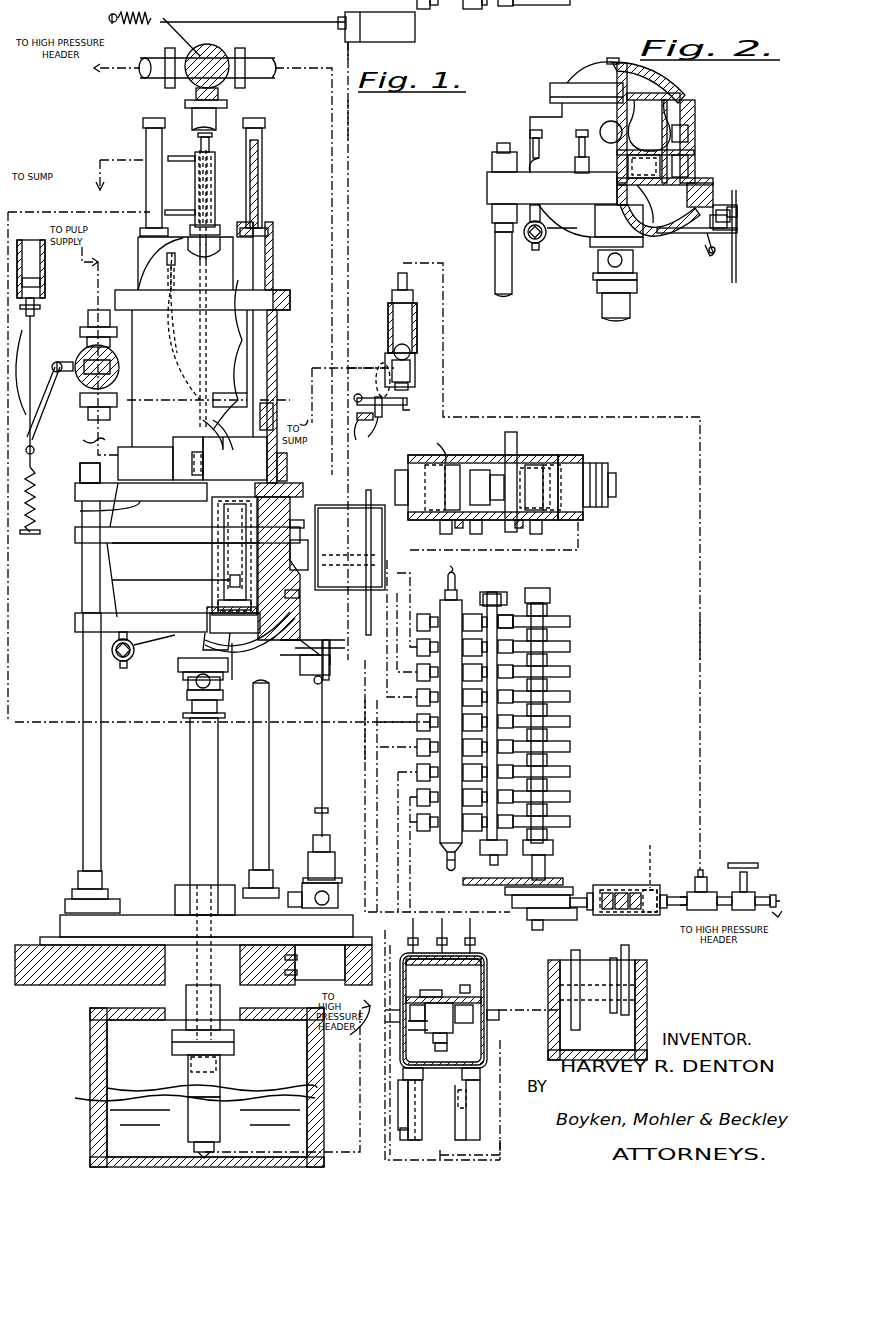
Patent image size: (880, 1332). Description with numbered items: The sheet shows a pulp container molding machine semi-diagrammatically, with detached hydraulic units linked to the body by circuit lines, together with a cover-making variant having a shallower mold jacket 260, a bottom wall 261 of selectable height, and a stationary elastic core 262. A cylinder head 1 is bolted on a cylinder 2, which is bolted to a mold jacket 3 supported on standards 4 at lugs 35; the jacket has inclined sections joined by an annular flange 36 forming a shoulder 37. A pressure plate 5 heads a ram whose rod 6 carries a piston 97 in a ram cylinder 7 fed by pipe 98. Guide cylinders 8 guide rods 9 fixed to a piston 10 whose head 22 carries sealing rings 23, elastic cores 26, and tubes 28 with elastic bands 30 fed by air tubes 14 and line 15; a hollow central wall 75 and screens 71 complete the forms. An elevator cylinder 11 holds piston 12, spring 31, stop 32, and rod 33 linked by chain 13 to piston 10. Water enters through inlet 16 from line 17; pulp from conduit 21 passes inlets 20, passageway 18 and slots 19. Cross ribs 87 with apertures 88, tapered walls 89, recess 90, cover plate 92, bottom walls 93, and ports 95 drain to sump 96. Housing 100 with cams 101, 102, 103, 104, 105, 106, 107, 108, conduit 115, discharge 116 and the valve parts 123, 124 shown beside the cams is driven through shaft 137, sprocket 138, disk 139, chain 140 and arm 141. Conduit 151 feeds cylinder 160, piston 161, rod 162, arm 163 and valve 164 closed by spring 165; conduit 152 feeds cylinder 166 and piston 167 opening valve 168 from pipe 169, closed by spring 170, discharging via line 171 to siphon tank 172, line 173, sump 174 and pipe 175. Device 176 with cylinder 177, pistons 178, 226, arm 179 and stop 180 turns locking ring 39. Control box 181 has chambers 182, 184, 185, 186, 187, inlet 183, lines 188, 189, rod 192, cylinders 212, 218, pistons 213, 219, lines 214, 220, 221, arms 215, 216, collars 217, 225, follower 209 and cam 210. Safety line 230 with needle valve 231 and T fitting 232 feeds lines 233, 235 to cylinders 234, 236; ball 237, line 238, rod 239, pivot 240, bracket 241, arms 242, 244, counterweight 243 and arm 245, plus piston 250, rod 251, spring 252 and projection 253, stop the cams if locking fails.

In FIG. 1, the cylinder head 1 is at (144, 262).
In FIG. 1, the cylinder 2 is at (278, 338).
In FIG. 1, the mold jacket 3 is at (288, 512).
In FIG. 1, the standards 4 is at (100, 697).
In FIG. 1, the pressure plate 5 is at (287, 388).
In FIG. 1, the ram rod 6 is at (306, 545).
In FIG. 1, the ram cylinder 7 is at (188, 1068).
In FIG. 1, the guide cylinders 8 is at (146, 146).
In FIG. 1, the guide rods 9 is at (254, 274).
In FIG. 1, the piston 10 is at (235, 422).
In FIG. 1, the elevator cylinder 11 is at (216, 184).
In FIG. 1, the elevator piston 12 is at (218, 166).
In FIG. 1, the chain 13 is at (210, 272).
In FIG. 1, the air inlet tubes 14 is at (183, 277).
In FIG. 1, the flexible air line 15 is at (187, 288).
In FIG. 1, the high pressure water inlet 16 is at (214, 230).
In FIG. 1, the high pressure water line 17 is at (212, 118).
In FIG. 1, the passageway 18 is at (288, 466).
In FIG. 1, the slots 19 is at (298, 490).
In FIG. 1, the inlets 20 is at (195, 452).
In FIG. 1, the conduit 21 is at (83, 456).
In FIG. 1, the head 22 is at (209, 463).
In FIG. 1, the sealing rings 23 is at (275, 414).
In FIG. 1, the elastic mold core 26 is at (222, 525).
In FIG. 1, the rigid tube 28 is at (228, 558).
In FIG. 1, the annular elastic band 30 is at (212, 602).
In FIG. 1, the coil spring 31 is at (195, 180).
In FIG. 1, the stop 32 is at (195, 210).
In FIG. 1, the piston rod 33 is at (160, 262).
In FIG. 1, the lugs 35 is at (80, 538).
In FIG. 1, the annular flange 36 is at (299, 598).
In FIG. 1, the shoulder 37 is at (305, 520).
In FIG. 1, the locking ring 39 is at (236, 648).
In FIG. 1, the fine mesh screen 71 is at (228, 572).
In FIG. 1, the hollow central wall 75 is at (222, 514).
In FIG. 1, the cross ribs 87 is at (210, 626).
In FIG. 1, the apertures 88 is at (208, 652).
In FIG. 1, the tapered walls 89 is at (214, 696).
In FIG. 1, the recess 90 is at (292, 610).
In FIG. 1, the perforated cover plate 92 is at (250, 632).
In FIG. 1, the bottom form walls 93 is at (233, 624).
In FIG. 1, the ports 95 is at (186, 690).
In FIG. 1, the sump 96 is at (110, 1030).
In FIG. 1, the piston 97 is at (196, 1083).
In FIG. 1, the high pressure water pipe 98 is at (248, 1153).
In FIG. 1, the housing 100 is at (442, 712).
In FIG. 1, the cam 101 is at (570, 722).
In FIG. 1, the cam 102 is at (570, 697).
In FIG. 1, the cam 103 is at (570, 647).
In FIG. 1, the cam 104 is at (570, 672).
In FIG. 1, the cam 105 is at (570, 797).
In FIG. 1, the cam 106 is at (570, 822).
In FIG. 1, the cam 107 is at (570, 772).
In FIG. 1, the cam 108 is at (570, 747).
In FIG. 1, the high pressure conduit 115 is at (455, 582).
In FIG. 1, the discharge conduit 116 is at (446, 870).
In FIG. 1, the cam 123 is at (518, 615).
In FIG. 1, the follower 124 is at (498, 604).
In FIG. 1, the cam shaft 137 is at (547, 858).
In FIG. 1, the sprocket 138 is at (548, 882).
In FIG. 1, the disk 139 is at (596, 885).
In FIG. 1, the chain 140 is at (499, 857).
In FIG. 1, the arm 141 is at (556, 914).
In FIG. 1, the high pressure conduit 151 is at (342, 730).
In FIG. 1, the conduit 152 is at (348, 126).
In FIG. 1, the cylinder 160 is at (42, 272).
In FIG. 1, the piston 161 is at (38, 284).
In FIG. 1, the rod 162 is at (34, 336).
In FIG. 1, the arm 163 is at (54, 401).
In FIG. 1, the valve 164 is at (82, 362).
In FIG. 1, the spring 165 is at (36, 501).
In FIG. 1, the cylinder 166 is at (400, 45).
In FIG. 1, the piston 167 is at (287, 27).
In FIG. 1, the valve 168 is at (204, 60).
In FIG. 1, the supply pipe 169 is at (160, 82).
In FIG. 1, the spring 170 is at (110, 24).
In FIG. 1, the discharge line 171 is at (269, 66).
In FIG. 1, the siphon tank 172 is at (382, 526).
In FIG. 1, the line 173 is at (319, 654).
In FIG. 1, the sump 174 is at (630, 1000).
In FIG. 1, the discharge pipe 175 is at (367, 612).
In FIG. 1, the hydraulic device 176 is at (105, 663).
In FIG. 1, the cylinder 177 is at (582, 458).
In FIG. 1, the piston 178 is at (566, 478).
In FIG. 1, the arm 179 is at (505, 440).
In FIG. 1, the adjustable stop 180 is at (466, 524).
In FIG. 1, the control box 181 is at (455, 971).
In FIG. 1, the central chamber 182 is at (470, 997).
In FIG. 1, the inlet 183 is at (453, 1054).
In FIG. 1, the chamber 184 is at (478, 965).
In FIG. 1, the chamber 185 is at (480, 1046).
In FIG. 1, the chamber 186 is at (410, 1030).
In FIG. 1, the chamber 187 is at (480, 1022).
In FIG. 1, the high pressure water line 188 is at (410, 1008).
In FIG. 1, the line 189 is at (490, 1008).
In FIG. 2, the rod 192 is at (740, 250).
In FIG. 1, the cam follower 209 is at (306, 680).
In FIG. 2, the cam follower 209 is at (615, 285).
In FIG. 2, the cam 210 is at (738, 208).
In FIG. 1, the cylinder 212 is at (458, 1118).
In FIG. 1, the piston 213 is at (458, 1105).
In FIG. 1, the line 214 is at (464, 1160).
In FIG. 1, the arm 215 is at (494, 1105).
In FIG. 2, the arm 216 is at (740, 233).
In FIG. 1, the collar 217 is at (315, 811).
In FIG. 1, the cylinder 218 is at (399, 1111).
In FIG. 1, the piston 219 is at (396, 1155).
In FIG. 1, the pipe line 220 is at (396, 1104).
In FIG. 1, the line 221 is at (410, 1120).
In FIG. 2, the collar 225 is at (740, 222).
In FIG. 1, the piston 226 is at (427, 446).
In FIG. 1, the high pressure line 230 is at (767, 897).
In FIG. 1, the needle valve 231 is at (743, 870).
In FIG. 1, the T fitting 232 is at (707, 893).
In FIG. 1, the line 233 is at (677, 892).
In FIG. 1, the cylinder 234 is at (660, 912).
In FIG. 1, the line 235 is at (700, 640).
In FIG. 1, the cylinder 236 is at (417, 326).
In FIG. 1, the ball valve 237 is at (409, 354).
In FIG. 1, the line 238 is at (364, 368).
In FIG. 1, the ball-lift-rod 239 is at (407, 375).
In FIG. 1, the pivot 240 is at (382, 406).
In FIG. 1, the bracket 241 is at (381, 386).
In FIG. 1, the arm 242 is at (414, 406).
In FIG. 1, the counterweight 243 is at (365, 431).
In FIG. 1, the arm 244 is at (384, 418).
In FIG. 1, the arm 245 is at (385, 438).
In FIG. 1, the piston 250 is at (651, 858).
In FIG. 1, the rod 251 is at (614, 912).
In FIG. 1, the spring 252 is at (634, 912).
In FIG. 1, the angular projection 253 is at (580, 910).
In FIG. 2, the mold jacket 260 is at (707, 161).
In FIG. 2, the bottom wall 261 is at (660, 237).
In FIG. 2, the elastic core 262 is at (646, 125).